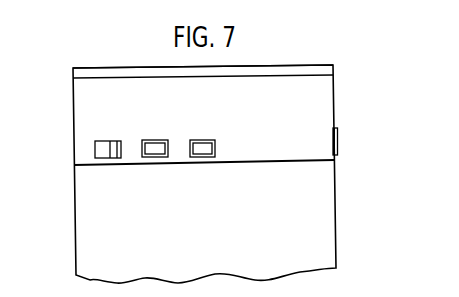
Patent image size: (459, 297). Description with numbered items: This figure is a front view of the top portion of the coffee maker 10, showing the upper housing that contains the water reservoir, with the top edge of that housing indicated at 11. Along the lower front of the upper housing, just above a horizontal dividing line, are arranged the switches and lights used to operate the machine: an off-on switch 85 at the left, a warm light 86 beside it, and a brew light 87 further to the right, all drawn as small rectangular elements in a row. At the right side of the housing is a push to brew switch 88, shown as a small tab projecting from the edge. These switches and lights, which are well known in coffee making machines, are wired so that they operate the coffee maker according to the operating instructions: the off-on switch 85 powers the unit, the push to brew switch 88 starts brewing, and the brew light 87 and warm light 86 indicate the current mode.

The display device 10 is at (345, 107).
The top edge / housing 11 is at (101, 67).
The off-on switch 85 is at (95, 152).
The warm light 86 is at (158, 150).
The brew light 87 is at (203, 150).
The push to brew switch 88 is at (370, 136).